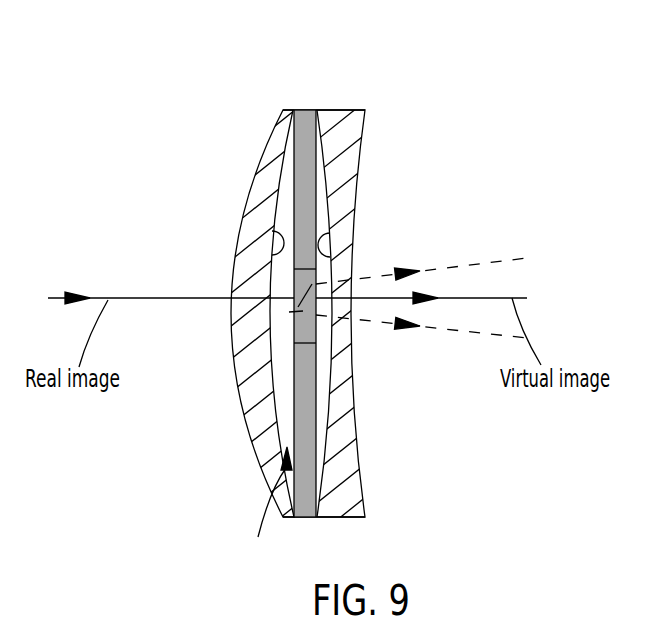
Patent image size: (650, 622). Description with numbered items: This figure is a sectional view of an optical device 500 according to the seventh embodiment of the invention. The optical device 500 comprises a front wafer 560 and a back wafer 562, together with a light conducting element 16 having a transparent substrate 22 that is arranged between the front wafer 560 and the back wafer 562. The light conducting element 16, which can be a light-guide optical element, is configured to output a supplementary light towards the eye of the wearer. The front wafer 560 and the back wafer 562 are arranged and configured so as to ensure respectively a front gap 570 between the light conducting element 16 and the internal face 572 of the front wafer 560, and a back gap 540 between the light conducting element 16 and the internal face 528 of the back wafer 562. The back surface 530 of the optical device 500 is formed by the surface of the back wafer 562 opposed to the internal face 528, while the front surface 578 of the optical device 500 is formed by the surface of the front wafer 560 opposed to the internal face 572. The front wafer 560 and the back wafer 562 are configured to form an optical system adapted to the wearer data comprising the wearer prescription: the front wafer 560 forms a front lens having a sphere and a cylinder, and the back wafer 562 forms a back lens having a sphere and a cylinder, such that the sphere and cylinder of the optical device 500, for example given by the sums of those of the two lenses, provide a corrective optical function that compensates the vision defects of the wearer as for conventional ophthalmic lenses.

The optical device 500 is at (405, 80).
The transparent substrate 22 is at (305, 126).
The light conducting element 16 is at (308, 330).
The front wafer 560 is at (253, 410).
The back wafer 562 is at (343, 168).
The internal face of the front wafer 572 is at (273, 228).
The internal face of the back wafer 528 is at (327, 240).
The back gap 540 is at (322, 375).
The back surface 530 is at (360, 473).
The front surface 578 is at (250, 460).
The front gap 570 is at (267, 510).